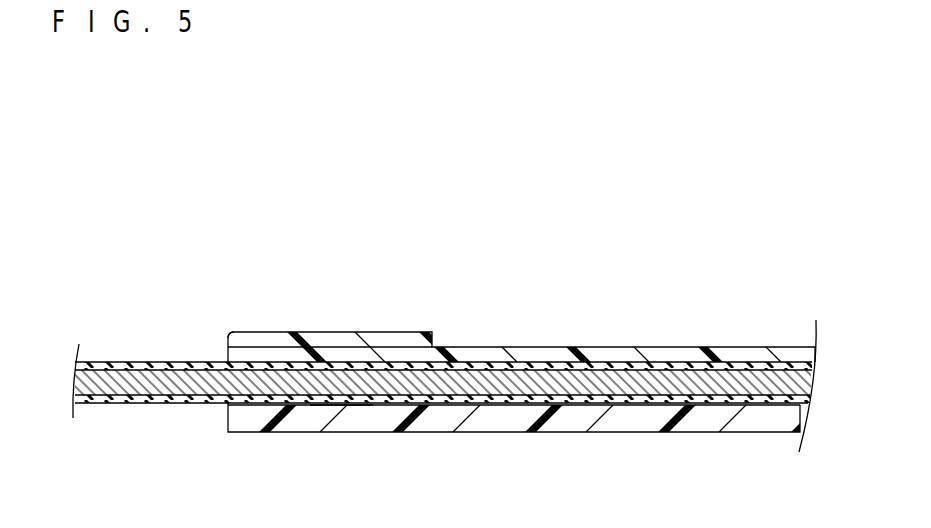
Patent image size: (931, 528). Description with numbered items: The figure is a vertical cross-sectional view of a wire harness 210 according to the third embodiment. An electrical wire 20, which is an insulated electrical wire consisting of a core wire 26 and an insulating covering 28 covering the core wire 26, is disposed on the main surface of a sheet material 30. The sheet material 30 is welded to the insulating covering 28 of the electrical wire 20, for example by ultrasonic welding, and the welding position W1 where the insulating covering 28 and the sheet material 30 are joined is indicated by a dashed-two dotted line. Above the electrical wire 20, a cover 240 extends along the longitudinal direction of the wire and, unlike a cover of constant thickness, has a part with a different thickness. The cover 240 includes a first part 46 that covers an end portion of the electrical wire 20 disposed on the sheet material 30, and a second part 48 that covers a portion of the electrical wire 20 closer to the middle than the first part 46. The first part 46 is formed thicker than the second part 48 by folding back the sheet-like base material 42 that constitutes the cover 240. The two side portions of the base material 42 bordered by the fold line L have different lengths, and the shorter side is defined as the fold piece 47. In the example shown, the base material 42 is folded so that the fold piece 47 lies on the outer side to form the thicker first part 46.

The wire harness 210 is at (195, 192).
The electrical wire 20 is at (167, 306).
The core wire 26 is at (110, 372).
The insulating covering 28 is at (143, 362).
The base material 42 is at (554, 356).
The cover 240 is at (483, 258).
The first part 46 is at (393, 328).
The second part 48 is at (462, 346).
The fold piece 47 is at (343, 340).
The sheet material 30 is at (613, 418).
The fold line L is at (227, 347).
The welding position W1 is at (310, 406).